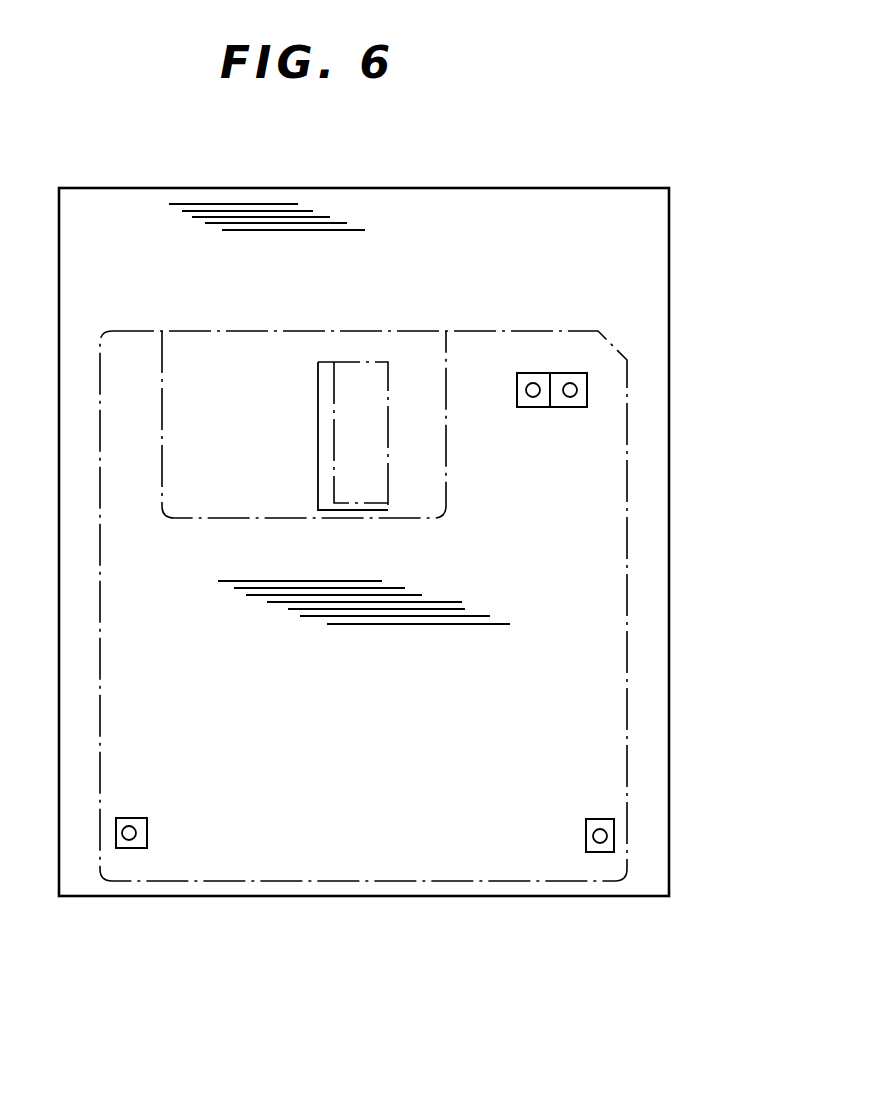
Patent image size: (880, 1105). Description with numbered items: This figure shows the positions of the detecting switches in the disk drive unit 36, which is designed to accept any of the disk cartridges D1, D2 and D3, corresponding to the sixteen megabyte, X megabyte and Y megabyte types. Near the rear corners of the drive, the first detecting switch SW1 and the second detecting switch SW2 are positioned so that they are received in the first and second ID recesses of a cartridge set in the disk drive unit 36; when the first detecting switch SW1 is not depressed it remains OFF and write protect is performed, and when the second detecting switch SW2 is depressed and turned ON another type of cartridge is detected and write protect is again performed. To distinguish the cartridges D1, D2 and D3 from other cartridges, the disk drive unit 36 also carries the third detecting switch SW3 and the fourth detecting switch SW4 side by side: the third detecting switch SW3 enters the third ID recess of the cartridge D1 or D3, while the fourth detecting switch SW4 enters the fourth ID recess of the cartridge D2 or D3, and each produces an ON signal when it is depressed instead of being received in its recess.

The disk drive unit 36 is at (669, 799).
The 16 MB disk cartridge D1 is at (452, 606).
The X MB disk cartridge D2 is at (363, 606).
The Y MB disk cartridge D3 is at (363, 606).
The first detecting switch SW1 is at (597, 853).
The second detecting switch SW2 is at (135, 849).
The third detecting switch SW3 is at (577, 409).
The fourth detecting switch SW4 is at (532, 409).